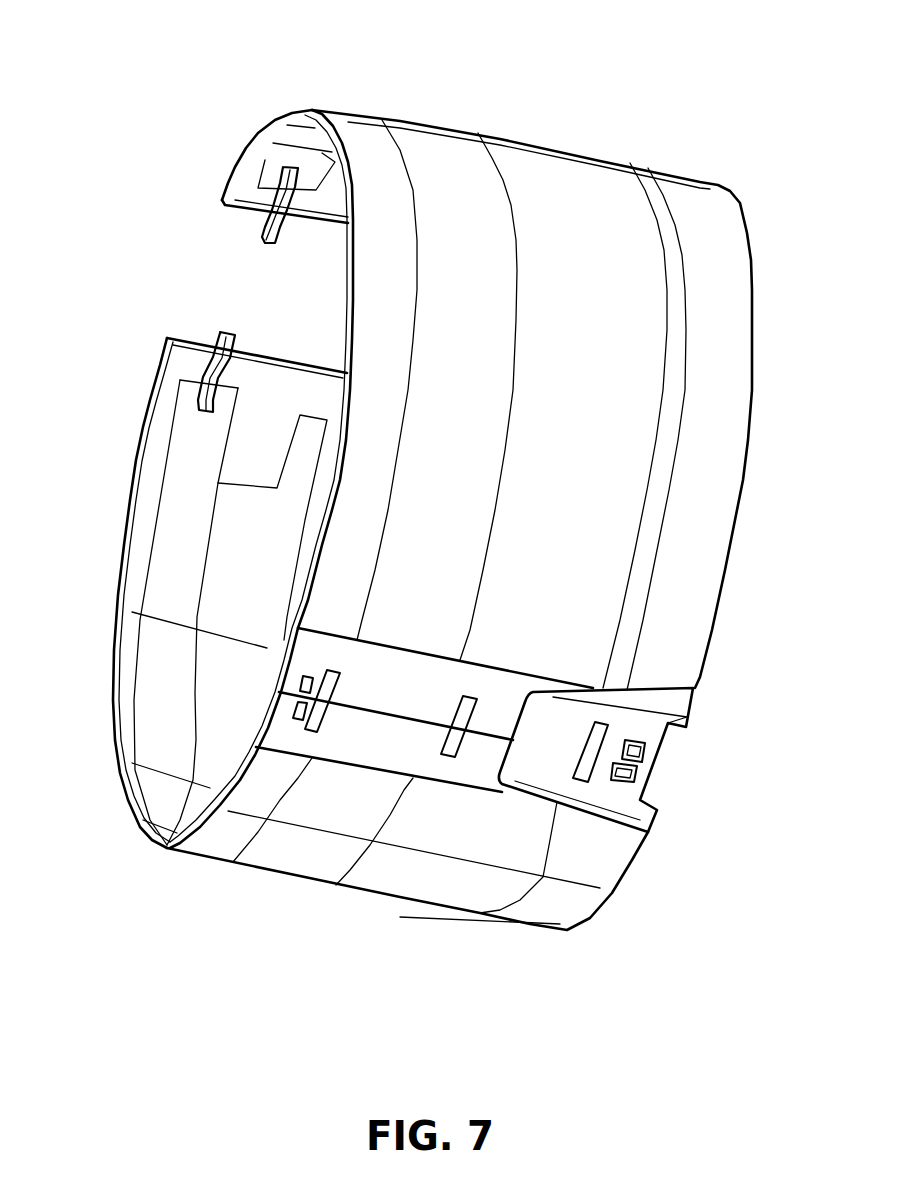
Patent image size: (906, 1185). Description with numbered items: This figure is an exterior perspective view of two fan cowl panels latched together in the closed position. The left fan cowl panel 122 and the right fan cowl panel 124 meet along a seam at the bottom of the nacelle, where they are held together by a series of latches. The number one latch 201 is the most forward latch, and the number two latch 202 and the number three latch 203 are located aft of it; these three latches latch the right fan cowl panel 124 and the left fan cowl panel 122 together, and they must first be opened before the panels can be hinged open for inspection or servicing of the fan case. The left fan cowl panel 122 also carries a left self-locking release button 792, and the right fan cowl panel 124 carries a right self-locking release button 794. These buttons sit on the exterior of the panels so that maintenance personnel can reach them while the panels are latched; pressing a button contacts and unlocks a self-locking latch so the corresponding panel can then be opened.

The left fan cowl panel 122 is at (443, 125).
The right fan cowl panel 124 is at (140, 440).
The left self-locking release button 792 is at (300, 682).
The right self-locking release button 794 is at (296, 720).
The number one latch 201 is at (315, 732).
The number two latch 202 is at (455, 757).
The number three latch 203 is at (610, 720).